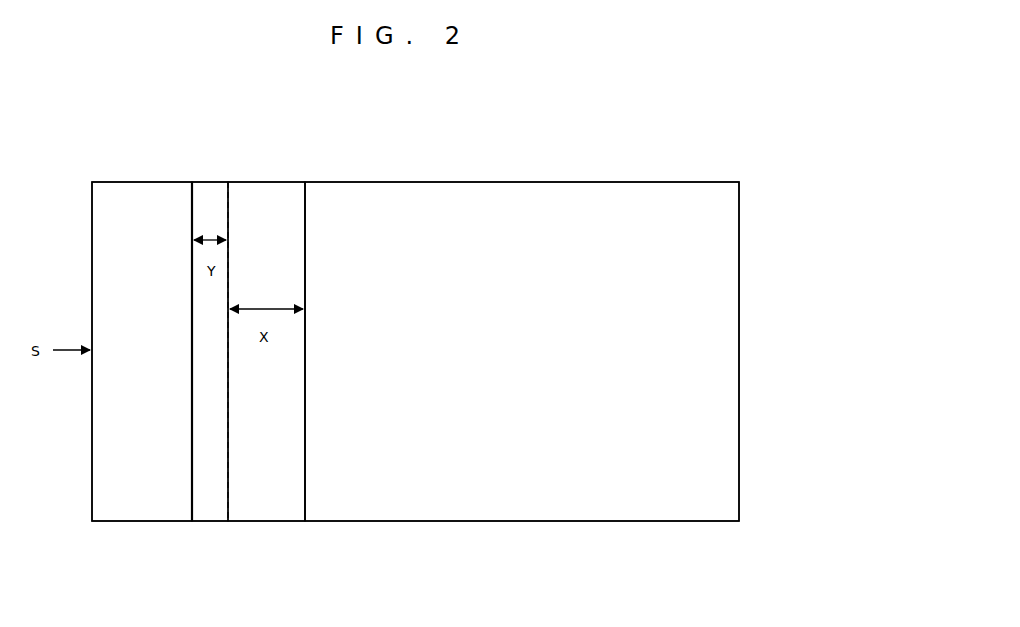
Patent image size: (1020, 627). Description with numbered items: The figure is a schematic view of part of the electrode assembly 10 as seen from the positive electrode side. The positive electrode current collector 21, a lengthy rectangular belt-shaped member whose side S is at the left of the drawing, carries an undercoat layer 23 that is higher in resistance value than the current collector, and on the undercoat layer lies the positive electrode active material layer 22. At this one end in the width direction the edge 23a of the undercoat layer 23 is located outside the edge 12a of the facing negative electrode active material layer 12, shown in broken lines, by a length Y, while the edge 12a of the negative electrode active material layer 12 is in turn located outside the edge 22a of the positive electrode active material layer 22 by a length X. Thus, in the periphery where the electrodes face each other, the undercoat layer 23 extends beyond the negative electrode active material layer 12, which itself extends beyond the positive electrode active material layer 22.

The electrode assembly 10 is at (740, 130).
The positive electrode current collector 21 is at (109, 253).
The positive electrode active material layer 22 is at (527, 493).
The edge of the positive electrode active material layer 22a is at (305, 221).
The undercoat layer 23 is at (207, 206).
The edge of the undercoat layer 23a is at (191, 494).
The negative electrode active material layer 12 is at (268, 483).
The edge of the negative electrode active material layer 12a is at (228, 483).